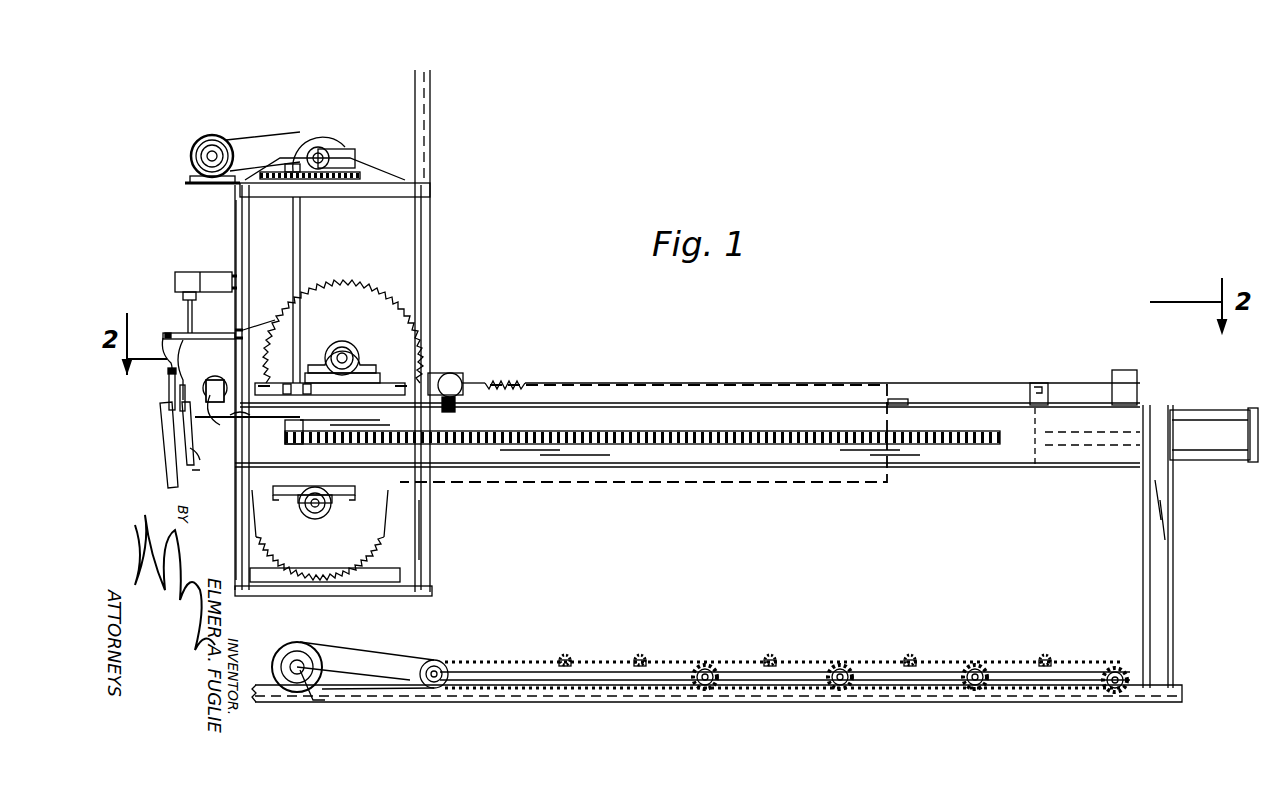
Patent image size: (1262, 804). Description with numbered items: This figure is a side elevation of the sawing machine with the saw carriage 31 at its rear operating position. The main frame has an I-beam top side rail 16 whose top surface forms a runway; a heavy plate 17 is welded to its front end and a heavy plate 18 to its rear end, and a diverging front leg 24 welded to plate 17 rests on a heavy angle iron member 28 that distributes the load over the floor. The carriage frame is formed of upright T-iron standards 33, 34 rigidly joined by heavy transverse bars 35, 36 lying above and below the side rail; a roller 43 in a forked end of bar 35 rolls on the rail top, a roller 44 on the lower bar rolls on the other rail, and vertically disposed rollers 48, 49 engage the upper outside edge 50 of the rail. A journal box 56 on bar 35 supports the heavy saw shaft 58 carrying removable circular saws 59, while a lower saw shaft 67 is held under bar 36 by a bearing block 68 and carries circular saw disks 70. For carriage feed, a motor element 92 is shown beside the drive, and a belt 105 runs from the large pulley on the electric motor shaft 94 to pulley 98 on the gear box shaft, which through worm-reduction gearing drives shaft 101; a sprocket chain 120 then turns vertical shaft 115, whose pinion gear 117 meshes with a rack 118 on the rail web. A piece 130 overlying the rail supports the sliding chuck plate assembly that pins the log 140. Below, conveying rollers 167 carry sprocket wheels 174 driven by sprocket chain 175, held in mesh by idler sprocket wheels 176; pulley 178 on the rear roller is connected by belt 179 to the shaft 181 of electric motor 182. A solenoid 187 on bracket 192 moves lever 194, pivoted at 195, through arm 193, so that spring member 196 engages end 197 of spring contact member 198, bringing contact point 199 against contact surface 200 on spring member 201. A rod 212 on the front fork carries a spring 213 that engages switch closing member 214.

The top side rail 16 is at (735, 400).
The heavy plate 17 is at (1136, 465).
The heavy plate 18 is at (198, 462).
The front leg 24 is at (1165, 550).
The angle iron member 28 is at (870, 700).
The saw carriage 31 is at (455, 272).
The upright T-iron standard 33 is at (238, 535).
The upright T-iron standard 34 is at (425, 503).
The transverse bar 35 is at (395, 392).
The transverse bar 36 is at (275, 486).
The roller 43 is at (472, 366).
The roller 44 is at (220, 372).
The vertically disposed roller 48 is at (248, 420).
The vertically disposed roller 49 is at (455, 408).
The upper outside edge 50 is at (618, 408).
The journal box 56 is at (342, 356).
The saw shaft 58 is at (360, 345).
The circular saw 59 is at (345, 280).
The saw shaft 67 is at (330, 503).
The bearing block 68 is at (320, 515).
The circular saw disk 70 is at (350, 570).
The motor pulley 92 is at (223, 142).
The electric motor shaft 94 is at (212, 156).
The pulley member 98 is at (330, 150).
The shaft 101 is at (352, 150).
The belt 105 is at (275, 136).
The vertical shaft 115 is at (300, 238).
The pinion gear 117 is at (300, 446).
The rack 118 is at (612, 446).
The sprocket chain 120 is at (318, 180).
The piece 130 is at (900, 399).
The log 140 is at (790, 390).
The roller 167 is at (732, 646).
The sprocket wheel 174 is at (575, 657).
The sprocket chain 175 is at (805, 665).
The idler sprocket wheel 176 is at (645, 655).
The pulley 178 is at (432, 660).
The belt 179 is at (407, 634).
The shaft 181 is at (332, 698).
The electric motor 182 is at (282, 690).
The solenoid 187 is at (183, 275).
The bracket 192 is at (219, 273).
The arm 193 is at (185, 318).
The lever 194 is at (210, 334).
The pivot 195 is at (261, 319).
The spring member 196 is at (167, 362).
The end 197 is at (168, 390).
The spring contact member 198 is at (161, 440).
The contact point 199 is at (180, 400).
The contact surface 200 is at (188, 350).
The spring member 201 is at (211, 432).
The rod 212 is at (490, 378).
The spring 213 is at (520, 380).
The switch closing member 214 is at (1105, 396).